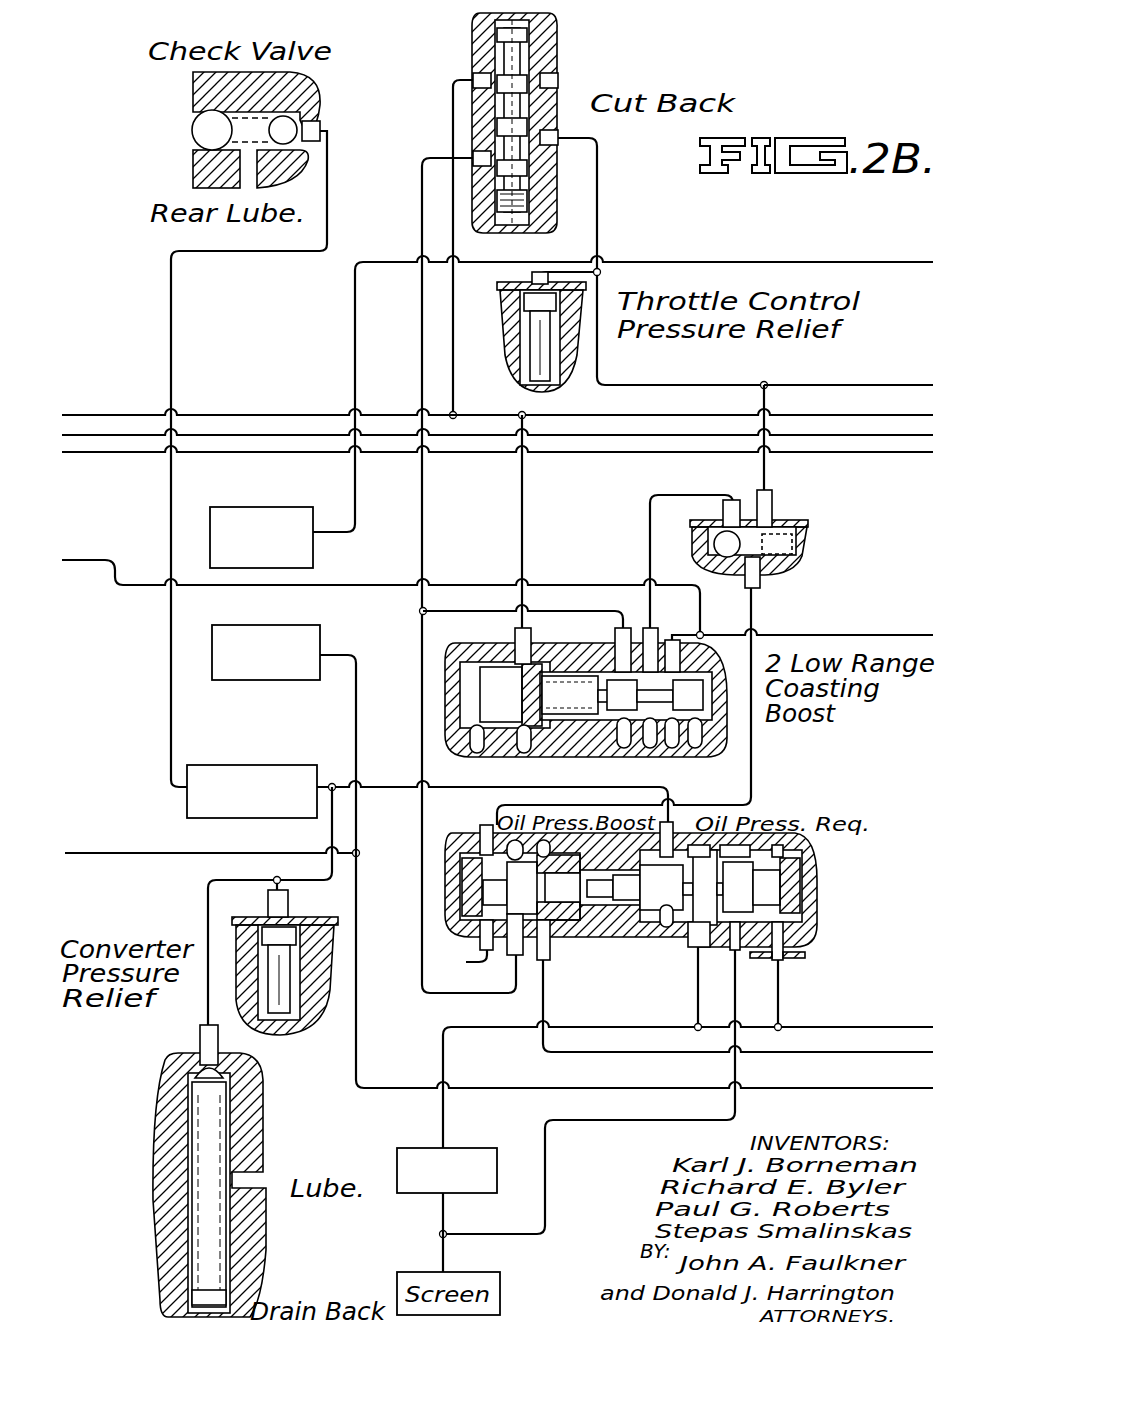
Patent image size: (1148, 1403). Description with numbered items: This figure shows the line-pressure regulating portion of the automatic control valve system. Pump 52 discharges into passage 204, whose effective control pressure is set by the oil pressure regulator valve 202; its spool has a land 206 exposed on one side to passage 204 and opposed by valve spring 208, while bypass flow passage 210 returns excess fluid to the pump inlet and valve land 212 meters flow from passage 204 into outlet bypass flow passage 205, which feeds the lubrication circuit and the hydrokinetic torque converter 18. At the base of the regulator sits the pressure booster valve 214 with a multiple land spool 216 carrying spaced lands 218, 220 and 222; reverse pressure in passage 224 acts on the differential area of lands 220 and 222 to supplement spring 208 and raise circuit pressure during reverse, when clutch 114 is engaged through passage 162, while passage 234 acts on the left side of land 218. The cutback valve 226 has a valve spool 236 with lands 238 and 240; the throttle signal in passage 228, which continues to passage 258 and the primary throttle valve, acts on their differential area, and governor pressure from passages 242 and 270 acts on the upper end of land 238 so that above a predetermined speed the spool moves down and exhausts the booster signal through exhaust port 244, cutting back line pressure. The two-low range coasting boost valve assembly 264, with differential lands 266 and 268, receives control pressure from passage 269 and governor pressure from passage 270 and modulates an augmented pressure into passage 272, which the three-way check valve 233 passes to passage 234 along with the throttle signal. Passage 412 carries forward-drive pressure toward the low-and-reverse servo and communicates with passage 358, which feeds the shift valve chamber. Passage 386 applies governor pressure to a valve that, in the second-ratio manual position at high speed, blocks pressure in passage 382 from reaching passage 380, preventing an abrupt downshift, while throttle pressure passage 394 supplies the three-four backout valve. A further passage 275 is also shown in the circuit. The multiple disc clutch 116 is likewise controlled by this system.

The passage 162 is at (765, 262).
The cutback valve 226 is at (535, 124).
The governor pressure passage 270 is at (675, 412).
The passage 258 is at (830, 385).
The governor pressure passage 242 is at (453, 195).
The line 275 is at (420, 505).
The passage 386 is at (205, 415).
The throttle pressure passage 394 is at (265, 435).
The passage 380 is at (235, 455).
The passage 382 is at (88, 560).
The passage 272 is at (713, 494).
The passage 269 is at (892, 636).
The passage 234 is at (757, 603).
The outlet bypass flow passage 205 is at (678, 824).
The passage 358 is at (105, 853).
The passage 412 is at (888, 1087).
The passage 204 is at (698, 1000).
The bypass flow passage 210 is at (737, 980).
The passage 224 is at (878, 1050).
The pressure booster valve 214 is at (490, 955).
The land 238 is at (514, 123).
The land 240 is at (497, 128).
The valve spool 236 is at (470, 156).
The exhaust port 244 is at (540, 190).
The passage 228 is at (596, 242).
The three-way check valve 233 is at (760, 540).
The valve land 266 is at (595, 712).
The valve land 268 is at (662, 712).
The coasting boost valve assembly 264 is at (650, 712).
The land 206 is at (626, 914).
The multiple land spool 216 is at (487, 882).
The land 218 is at (495, 892).
The land 220 is at (490, 908).
The valve spring 208 is at (583, 925).
The oil pressure regulator valve 202 is at (660, 912).
The valve land 212 is at (665, 925).
The land 222 is at (550, 960).
The multiple disc clutch 114 is at (306, 507).
The multiple disc clutch 116 is at (308, 628).
The hydrokinetic torque converter 18 is at (298, 765).
The pump 52 is at (470, 1148).